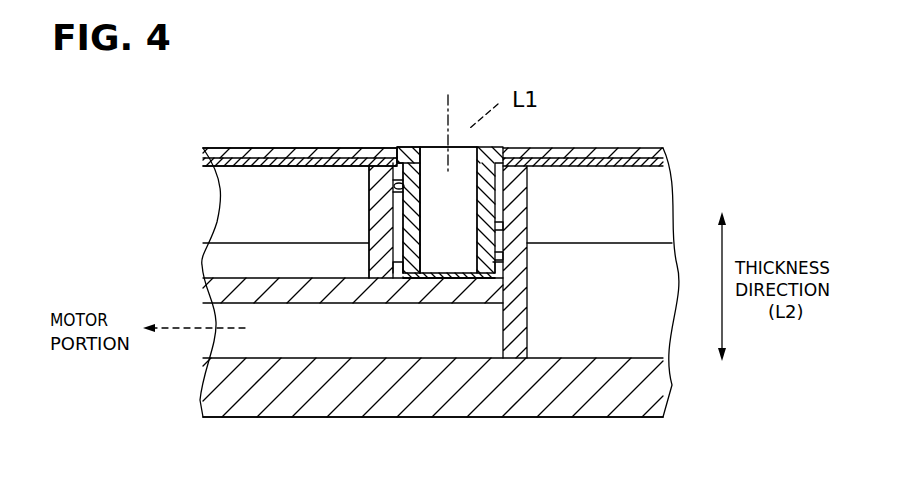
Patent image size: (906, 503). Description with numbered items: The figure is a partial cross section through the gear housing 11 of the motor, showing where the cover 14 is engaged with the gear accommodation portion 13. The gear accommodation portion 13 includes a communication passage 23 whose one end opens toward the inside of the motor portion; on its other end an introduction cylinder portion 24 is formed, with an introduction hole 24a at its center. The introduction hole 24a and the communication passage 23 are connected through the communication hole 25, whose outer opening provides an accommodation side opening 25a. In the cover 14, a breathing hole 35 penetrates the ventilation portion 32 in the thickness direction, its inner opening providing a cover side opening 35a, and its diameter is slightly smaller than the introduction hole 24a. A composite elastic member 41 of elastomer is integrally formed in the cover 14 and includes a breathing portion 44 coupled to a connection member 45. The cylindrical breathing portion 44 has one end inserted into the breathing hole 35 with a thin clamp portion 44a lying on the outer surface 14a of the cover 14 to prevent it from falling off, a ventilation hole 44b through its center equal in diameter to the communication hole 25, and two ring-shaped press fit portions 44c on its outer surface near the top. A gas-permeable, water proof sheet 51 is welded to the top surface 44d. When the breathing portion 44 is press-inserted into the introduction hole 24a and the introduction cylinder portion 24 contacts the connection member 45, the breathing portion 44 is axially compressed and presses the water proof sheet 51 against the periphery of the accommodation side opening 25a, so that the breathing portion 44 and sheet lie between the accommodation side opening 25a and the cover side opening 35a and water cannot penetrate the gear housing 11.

The gear housing 11 is at (704, 171).
The gear accommodation portion 13 is at (587, 418).
The cover 14 is at (248, 147).
The ventilation portion 32 is at (300, 157).
The outer surface of the cover 14a is at (638, 148).
The communication passage 23 is at (312, 362).
The introduction cylinder portion 24 is at (528, 204).
The introduction hole 24a is at (398, 186).
The communication hole 25 is at (405, 302).
The accommodation side opening 25a is at (437, 282).
The breathing hole 35 is at (490, 148).
The cover side opening 35a is at (421, 170).
The composite elastic member 41 is at (641, 168).
The breathing portion 44 is at (403, 238).
The clamp portion 44a is at (398, 147).
The ventilation hole 44b is at (428, 146).
The press fit portions 44c is at (502, 256).
The top surface of the breathing portion 44d is at (492, 283).
The connection member 45 is at (226, 168).
The water proof sheet 51 is at (448, 272).